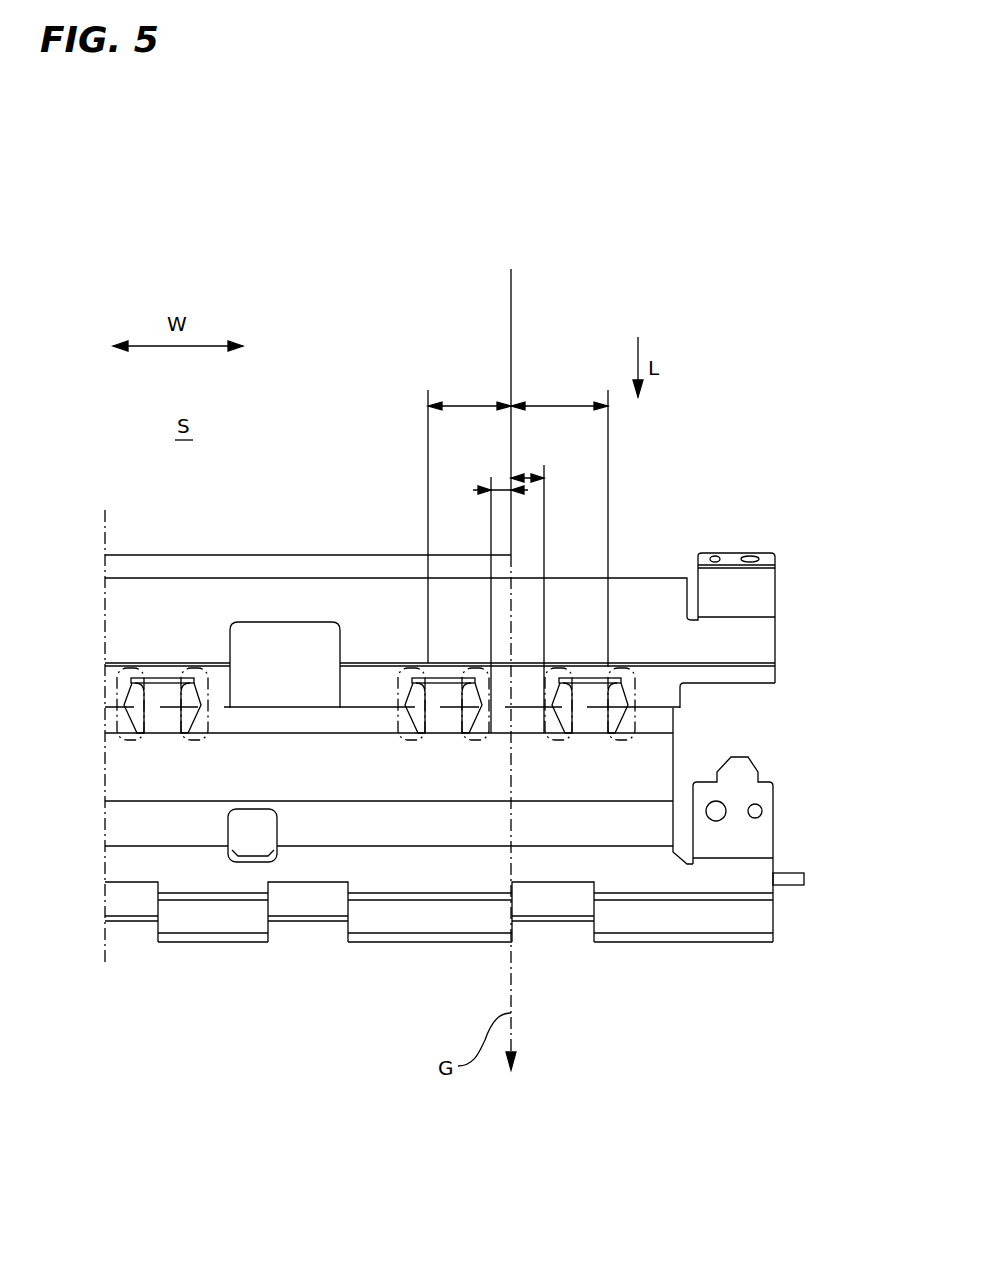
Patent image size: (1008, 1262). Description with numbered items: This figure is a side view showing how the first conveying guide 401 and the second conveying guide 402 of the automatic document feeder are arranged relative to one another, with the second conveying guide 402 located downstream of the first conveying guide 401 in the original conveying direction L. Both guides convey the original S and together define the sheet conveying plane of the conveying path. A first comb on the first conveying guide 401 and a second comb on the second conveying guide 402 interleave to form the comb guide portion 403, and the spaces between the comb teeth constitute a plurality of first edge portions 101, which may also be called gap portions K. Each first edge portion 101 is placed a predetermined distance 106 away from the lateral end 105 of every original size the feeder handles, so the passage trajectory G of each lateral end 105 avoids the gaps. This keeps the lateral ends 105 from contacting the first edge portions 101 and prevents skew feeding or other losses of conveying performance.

The lateral end 105 is at (511, 320).
The predetermined distance 106 is at (471, 405).
The first edge portion 101 is at (622, 740).
The first conveying guide 401 is at (775, 640).
The second conveying guide 402 is at (773, 822).
The comb guide portion 403 is at (670, 692).